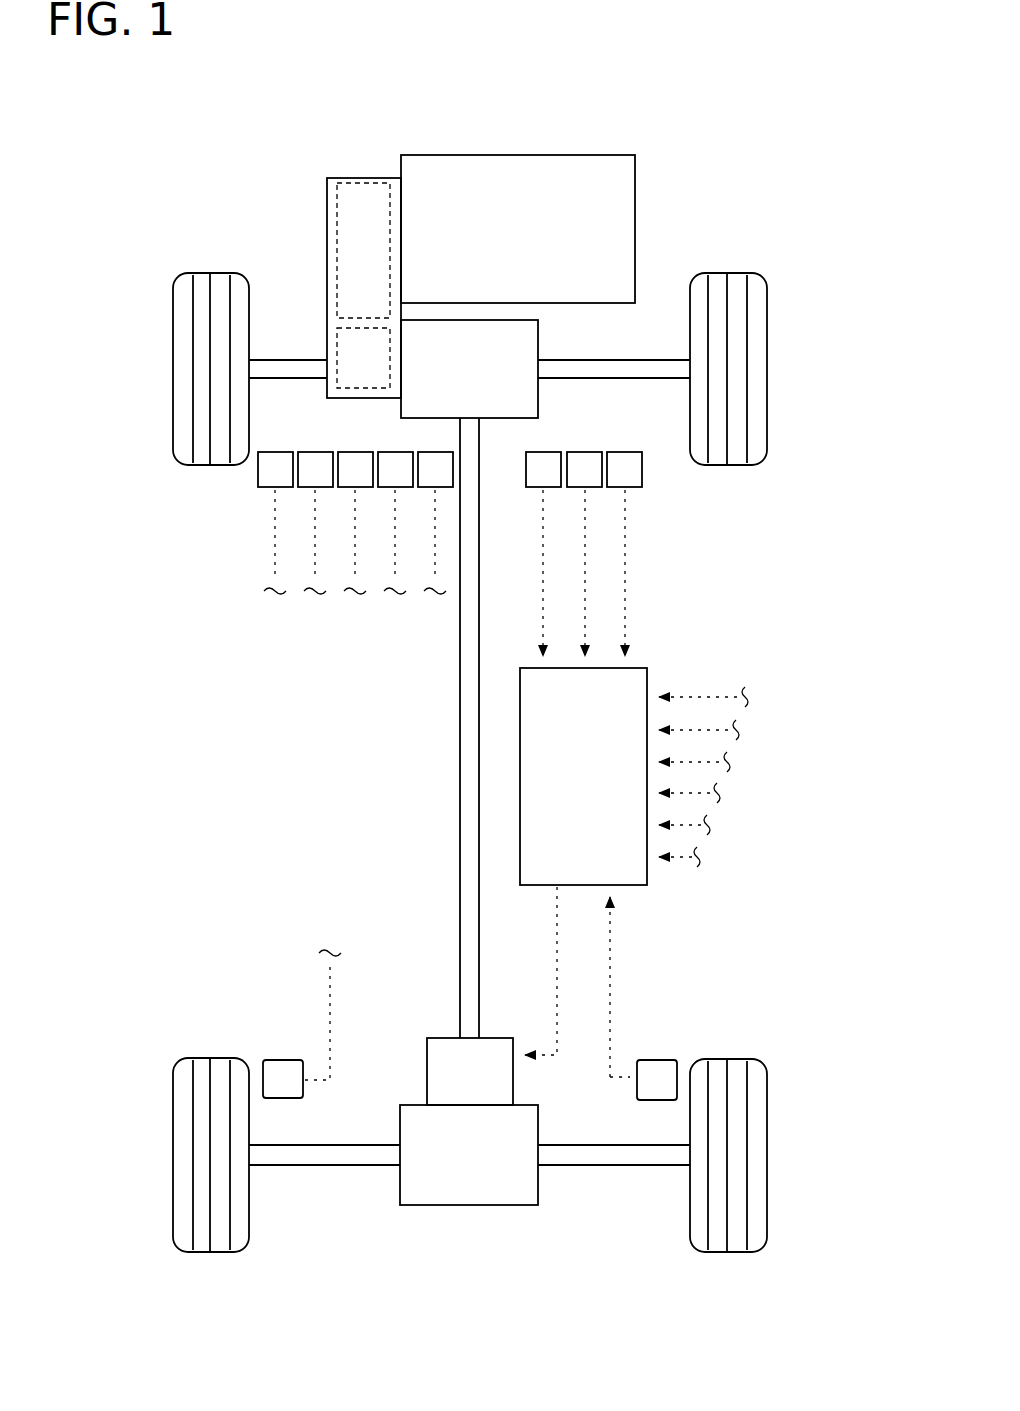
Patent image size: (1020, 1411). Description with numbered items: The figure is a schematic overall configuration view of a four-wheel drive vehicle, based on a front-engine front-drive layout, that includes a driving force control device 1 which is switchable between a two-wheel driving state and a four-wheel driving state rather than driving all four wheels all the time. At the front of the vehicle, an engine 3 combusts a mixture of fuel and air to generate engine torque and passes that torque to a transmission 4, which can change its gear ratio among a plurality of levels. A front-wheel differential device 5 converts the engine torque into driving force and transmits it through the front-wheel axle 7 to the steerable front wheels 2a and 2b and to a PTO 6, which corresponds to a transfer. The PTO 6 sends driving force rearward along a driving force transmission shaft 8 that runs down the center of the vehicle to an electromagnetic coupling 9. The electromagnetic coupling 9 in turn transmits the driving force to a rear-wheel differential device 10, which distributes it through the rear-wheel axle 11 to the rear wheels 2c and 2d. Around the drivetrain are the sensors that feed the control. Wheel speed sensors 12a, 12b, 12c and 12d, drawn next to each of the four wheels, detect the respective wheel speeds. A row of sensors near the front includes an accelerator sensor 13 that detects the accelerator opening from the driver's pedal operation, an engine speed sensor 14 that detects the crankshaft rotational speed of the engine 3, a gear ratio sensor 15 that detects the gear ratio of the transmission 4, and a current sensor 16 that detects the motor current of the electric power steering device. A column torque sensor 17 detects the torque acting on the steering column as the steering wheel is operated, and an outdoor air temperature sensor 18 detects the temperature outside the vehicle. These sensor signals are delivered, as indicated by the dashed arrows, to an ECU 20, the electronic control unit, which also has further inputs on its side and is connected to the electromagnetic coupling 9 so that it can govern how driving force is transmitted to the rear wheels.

The driving force control device 1 is at (745, 120).
The front wheel 2a is at (203, 465).
The front wheel 2b is at (723, 465).
The rear wheel 2c is at (218, 1252).
The rear wheel 2d is at (732, 1252).
The engine 3 is at (518, 153).
The transmission 4 is at (333, 252).
The front-wheel differential device 5 is at (325, 343).
The PTO 6 is at (540, 338).
The front-wheel axle 7 is at (640, 357).
The driving force transmission shaft 8 is at (460, 693).
The electromagnetic coupling 9 is at (438, 1038).
The rear-wheel differential device 10 is at (472, 1205).
The rear-wheel axle 11 is at (602, 1165).
The wheel speed sensor 12a is at (270, 488).
The wheel speed sensor 12b is at (618, 452).
The wheel speed sensor 12c is at (287, 1060).
The wheel speed sensor 12d is at (655, 1060).
The accelerator sensor 13 is at (312, 452).
The engine speed sensor 14 is at (350, 452).
The gear ratio sensor 15 is at (392, 452).
The current sensor 16 is at (440, 452).
The column torque sensor 17 is at (540, 452).
The outdoor air temperature sensor 18 is at (578, 452).
The ECU 20 is at (647, 656).